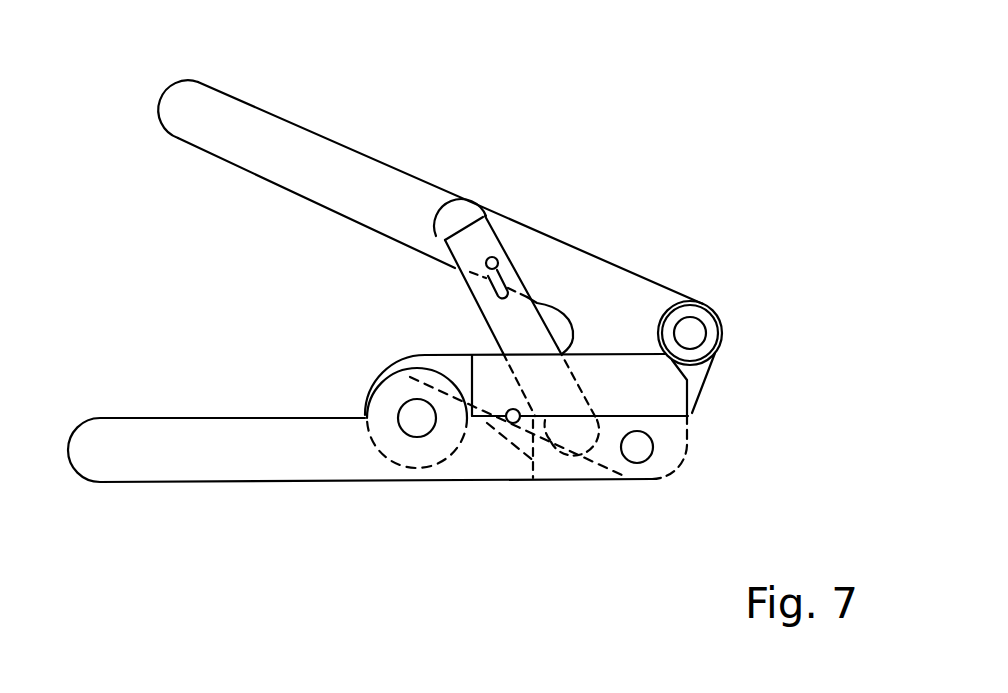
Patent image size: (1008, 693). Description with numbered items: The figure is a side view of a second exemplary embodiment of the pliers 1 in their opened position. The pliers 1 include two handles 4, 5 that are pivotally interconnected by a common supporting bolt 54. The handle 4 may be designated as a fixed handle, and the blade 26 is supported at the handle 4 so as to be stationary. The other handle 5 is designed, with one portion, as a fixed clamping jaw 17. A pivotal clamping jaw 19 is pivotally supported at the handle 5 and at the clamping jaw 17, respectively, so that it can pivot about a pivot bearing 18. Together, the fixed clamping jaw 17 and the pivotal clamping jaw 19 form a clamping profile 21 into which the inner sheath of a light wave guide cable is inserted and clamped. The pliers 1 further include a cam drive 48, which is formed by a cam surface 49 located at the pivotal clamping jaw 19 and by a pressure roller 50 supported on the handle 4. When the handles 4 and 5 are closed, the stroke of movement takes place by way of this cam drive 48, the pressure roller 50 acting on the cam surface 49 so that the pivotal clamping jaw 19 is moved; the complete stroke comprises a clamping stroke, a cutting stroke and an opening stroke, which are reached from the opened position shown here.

The pliers 1 is at (503, 121).
The handle 4 is at (283, 142).
The handle 5 is at (133, 437).
The fixed clamping jaw 17 is at (557, 461).
The pivot bearing 18 is at (418, 421).
The pivotal clamping jaw 19 is at (488, 393).
The clamping profile 21 is at (514, 424).
The blade 26 is at (523, 304).
The cam drive 48 is at (648, 333).
The cam surface 49 is at (643, 350).
The pressure roller 50 is at (714, 325).
The supporting bolt 54 is at (637, 452).